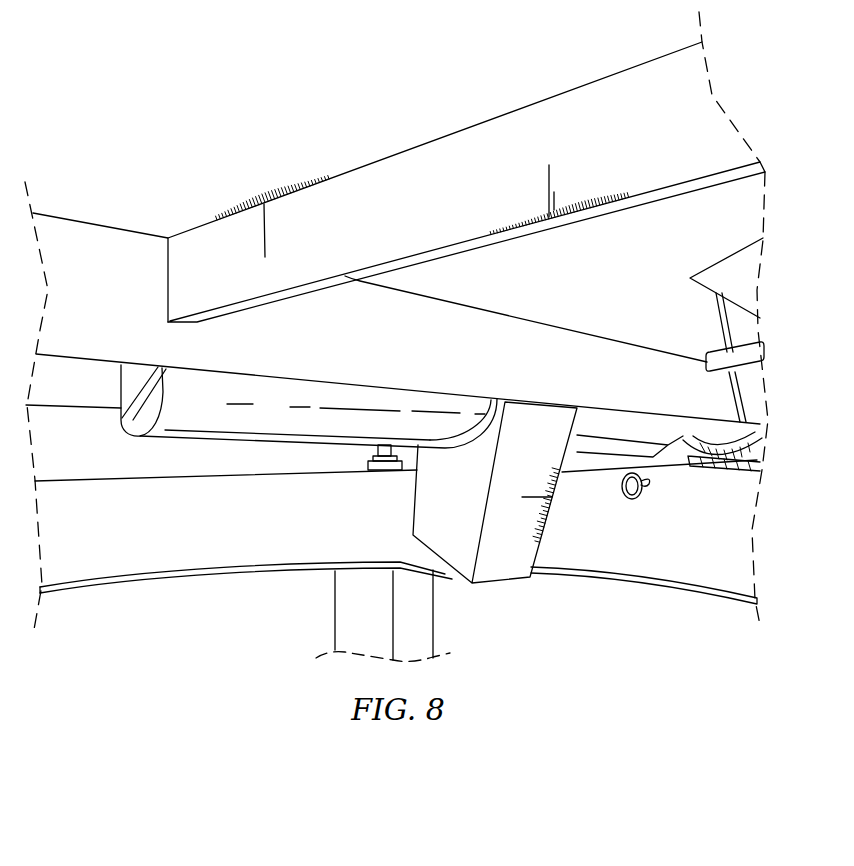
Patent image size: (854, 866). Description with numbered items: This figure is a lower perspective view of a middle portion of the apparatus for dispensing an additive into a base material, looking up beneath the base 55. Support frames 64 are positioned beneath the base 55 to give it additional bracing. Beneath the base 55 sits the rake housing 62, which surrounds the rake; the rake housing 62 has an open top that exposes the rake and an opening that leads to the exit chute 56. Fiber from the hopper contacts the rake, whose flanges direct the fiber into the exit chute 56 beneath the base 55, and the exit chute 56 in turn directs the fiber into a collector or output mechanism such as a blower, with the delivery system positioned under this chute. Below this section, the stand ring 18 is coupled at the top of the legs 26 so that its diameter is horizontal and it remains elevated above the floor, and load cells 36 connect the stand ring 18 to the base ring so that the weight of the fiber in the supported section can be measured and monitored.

The stand ring 18 is at (220, 533).
The legs 26 is at (350, 605).
The load cells 36 is at (378, 449).
The base 55 is at (548, 291).
The exit chute 56 is at (493, 548).
The rake housing 62 is at (181, 418).
The support frames 64 is at (90, 296).